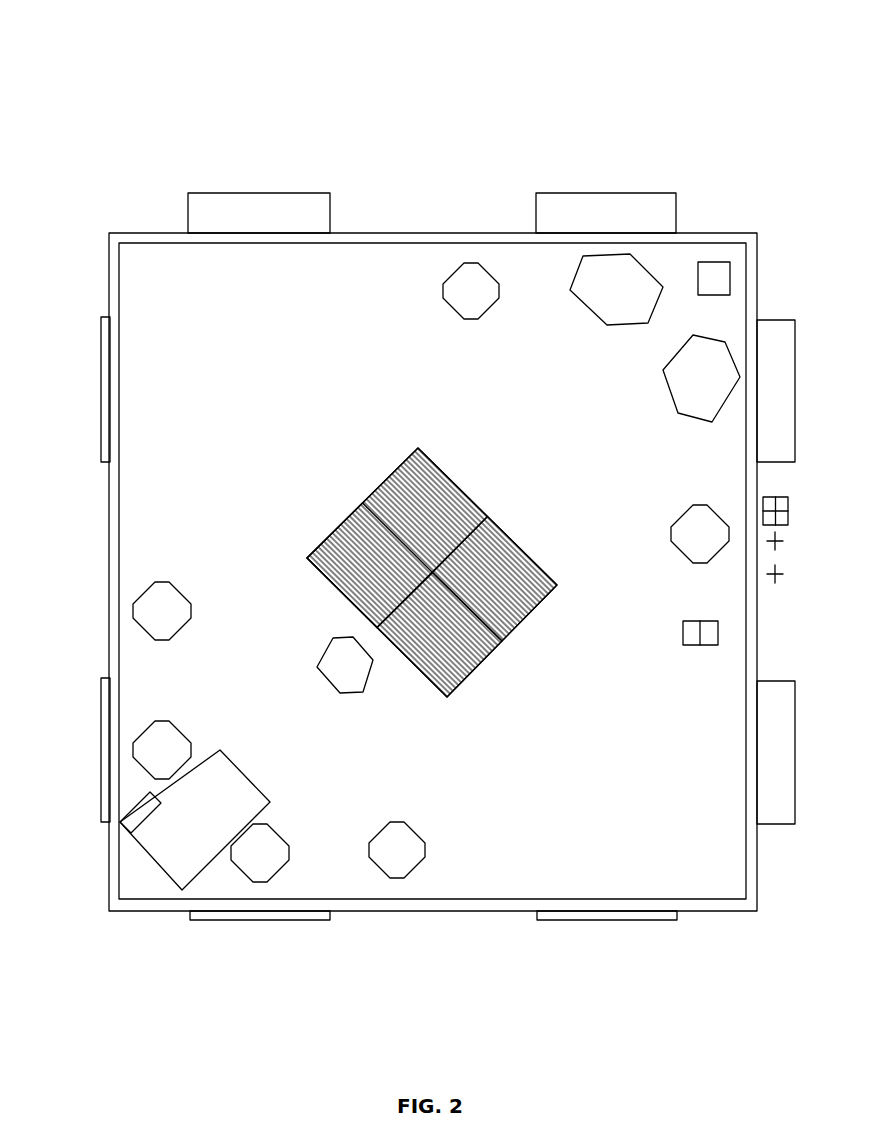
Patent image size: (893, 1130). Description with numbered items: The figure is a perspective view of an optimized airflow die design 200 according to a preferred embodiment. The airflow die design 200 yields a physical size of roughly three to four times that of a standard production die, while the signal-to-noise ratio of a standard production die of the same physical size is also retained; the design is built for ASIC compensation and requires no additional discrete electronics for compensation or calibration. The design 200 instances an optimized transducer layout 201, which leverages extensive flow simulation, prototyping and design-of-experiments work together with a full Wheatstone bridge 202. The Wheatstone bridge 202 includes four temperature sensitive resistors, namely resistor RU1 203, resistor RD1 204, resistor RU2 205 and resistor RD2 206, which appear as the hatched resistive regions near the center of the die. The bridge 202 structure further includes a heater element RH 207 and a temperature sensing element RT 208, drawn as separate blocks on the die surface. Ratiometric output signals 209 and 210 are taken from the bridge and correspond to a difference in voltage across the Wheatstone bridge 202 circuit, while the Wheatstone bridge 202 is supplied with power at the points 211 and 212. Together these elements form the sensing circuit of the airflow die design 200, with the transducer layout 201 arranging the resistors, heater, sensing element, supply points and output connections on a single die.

The airflow die design 200 is at (672, 85).
The transducer layout 201 is at (738, 232).
The Wheatstone bridge 202 is at (489, 660).
The temperature sensitive resistor RU1 203 is at (337, 555).
The temperature sensitive resistor RD1 204 is at (443, 670).
The temperature sensitive resistor RU2 205 is at (410, 488).
The temperature sensitive resistor RD2 206 is at (517, 590).
The heater element RH 207 is at (358, 693).
The temperature sensing element RT 208 is at (203, 813).
The ratiometric output signal 209 is at (128, 618).
The ratiometric output signal 210 is at (128, 752).
The power supply point 211 is at (483, 262).
The power supply point 212 is at (712, 502).